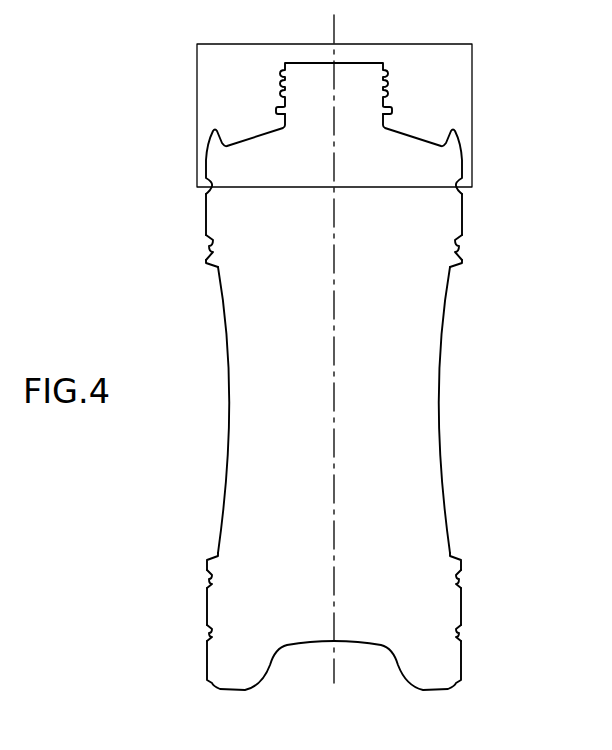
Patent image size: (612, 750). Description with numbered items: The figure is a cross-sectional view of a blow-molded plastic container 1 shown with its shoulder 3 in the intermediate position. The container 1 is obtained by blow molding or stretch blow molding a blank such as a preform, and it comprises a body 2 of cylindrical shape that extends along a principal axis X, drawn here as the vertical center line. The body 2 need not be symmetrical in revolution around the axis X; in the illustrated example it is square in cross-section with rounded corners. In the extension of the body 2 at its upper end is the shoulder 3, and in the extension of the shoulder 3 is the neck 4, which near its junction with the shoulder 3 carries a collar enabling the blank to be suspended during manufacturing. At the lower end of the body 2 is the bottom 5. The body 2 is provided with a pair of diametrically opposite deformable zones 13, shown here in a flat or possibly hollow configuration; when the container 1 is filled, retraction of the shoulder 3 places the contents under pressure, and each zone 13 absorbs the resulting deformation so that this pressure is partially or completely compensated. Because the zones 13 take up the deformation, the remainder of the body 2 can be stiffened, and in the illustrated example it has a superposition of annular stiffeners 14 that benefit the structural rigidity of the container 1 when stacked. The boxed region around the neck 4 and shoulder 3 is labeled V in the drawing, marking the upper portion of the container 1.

The container 1 is at (360, 396).
The body 2 is at (198, 213).
The shoulder 3 is at (414, 124).
The neck 4 is at (285, 64).
The bottom 5 is at (274, 697).
The deformable zone 13 is at (229, 399).
The annular stiffeners 14 is at (462, 256).
The principal axis X is at (335, 348).
The detail view boundary V is at (334, 101).